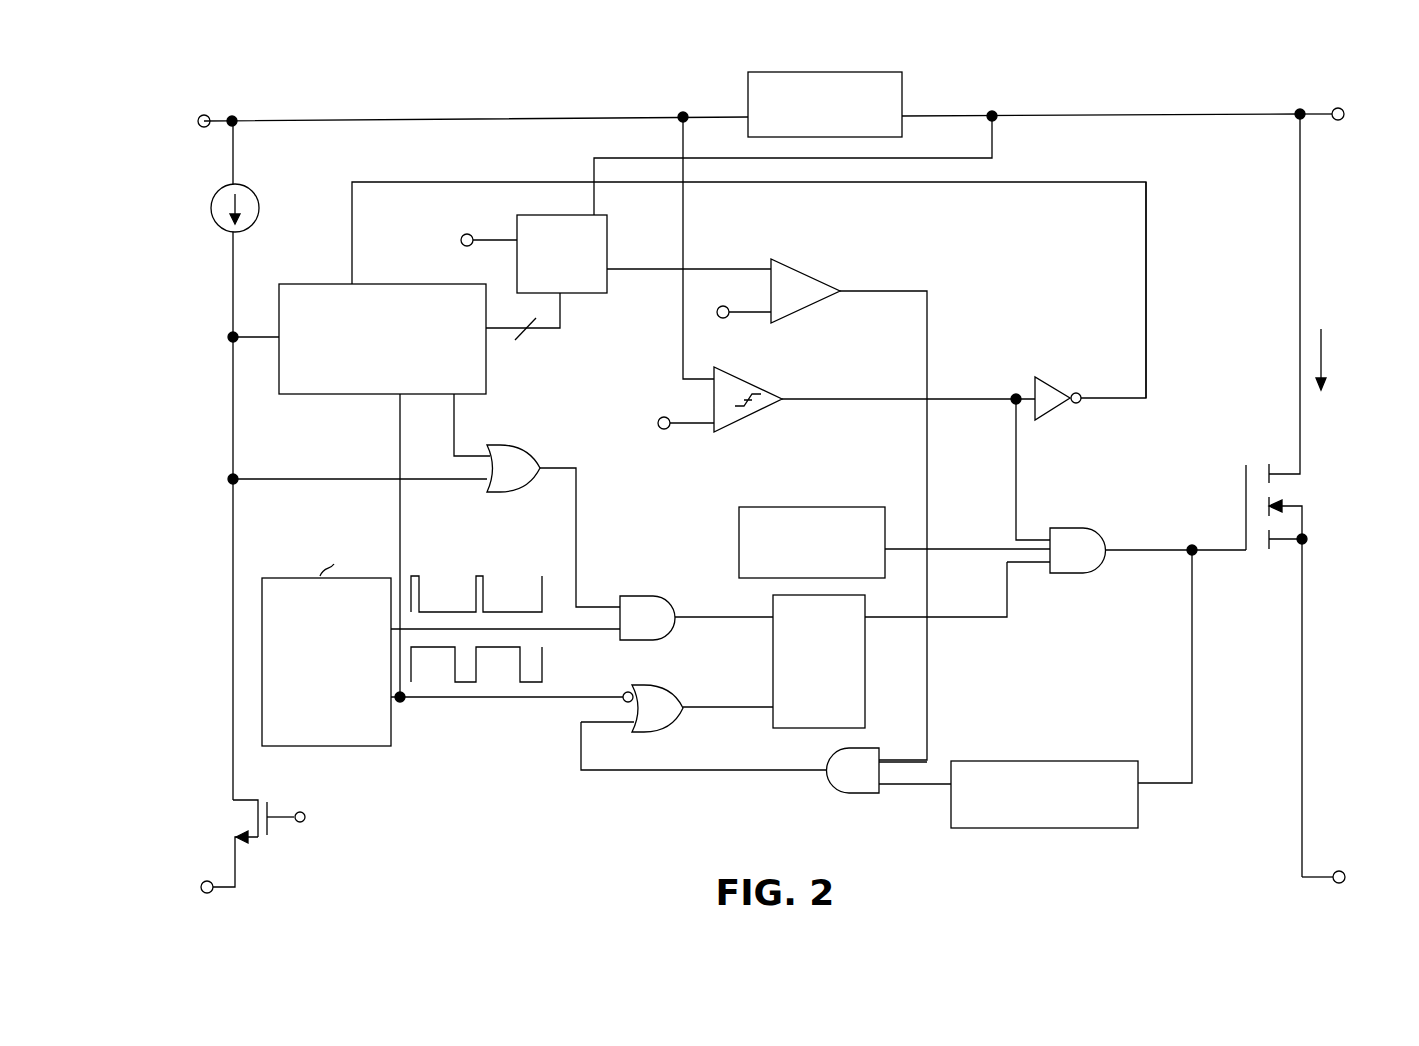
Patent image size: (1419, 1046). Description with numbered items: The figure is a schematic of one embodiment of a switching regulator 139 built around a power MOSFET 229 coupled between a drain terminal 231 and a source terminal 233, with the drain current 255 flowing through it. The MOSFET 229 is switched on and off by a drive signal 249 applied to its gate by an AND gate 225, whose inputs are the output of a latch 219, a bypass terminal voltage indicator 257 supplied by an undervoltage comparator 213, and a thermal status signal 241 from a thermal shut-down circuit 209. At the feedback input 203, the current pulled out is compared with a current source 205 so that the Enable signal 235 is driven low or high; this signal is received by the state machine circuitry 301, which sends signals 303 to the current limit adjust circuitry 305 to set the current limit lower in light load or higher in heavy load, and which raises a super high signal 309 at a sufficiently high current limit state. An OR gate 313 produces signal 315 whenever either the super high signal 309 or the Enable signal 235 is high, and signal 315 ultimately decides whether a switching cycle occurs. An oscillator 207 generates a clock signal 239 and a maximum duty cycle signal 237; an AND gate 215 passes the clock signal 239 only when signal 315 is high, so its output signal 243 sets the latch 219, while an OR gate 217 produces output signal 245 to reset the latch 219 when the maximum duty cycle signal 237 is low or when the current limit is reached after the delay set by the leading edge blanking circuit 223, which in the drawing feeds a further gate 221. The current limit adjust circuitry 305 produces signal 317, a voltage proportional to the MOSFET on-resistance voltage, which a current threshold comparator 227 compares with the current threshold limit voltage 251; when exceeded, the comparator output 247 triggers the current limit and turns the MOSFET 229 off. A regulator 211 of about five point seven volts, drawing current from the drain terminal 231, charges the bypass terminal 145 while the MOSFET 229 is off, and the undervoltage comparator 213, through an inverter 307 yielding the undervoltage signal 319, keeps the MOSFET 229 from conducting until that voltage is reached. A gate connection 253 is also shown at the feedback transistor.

The switching regulator 139 is at (807, 425).
The bypass terminal 145 is at (204, 128).
The current source 205 is at (264, 192).
The 5.7V regulator 211 is at (904, 80).
The drain terminal 231 is at (1336, 124).
The drive signal 249 is at (472, 234).
The current limit adjust circuitry 305 is at (530, 214).
The state machine circuitry 301 is at (412, 283).
The signals 303 is at (559, 328).
The signal 317 is at (652, 268).
The current threshold comparator 227 is at (805, 291).
The current threshold limit voltage 251 is at (778, 337).
The current limit comparator output 247 is at (930, 342).
The undervoltage comparator 213 is at (750, 418).
The inverter 307 is at (1050, 378).
The undervoltage signal 319 is at (1148, 332).
The drain current 255 is at (1330, 370).
The bypass terminal voltage indicator 257 is at (1018, 482).
The MOSFET 229 is at (1296, 490).
The source terminal 233 is at (1320, 874).
The Enable signal 235 is at (334, 477).
The super high signal 309 is at (456, 428).
The OR gate 313 is at (515, 468).
The signal 315 is at (580, 522).
The thermal shut-down circuit 209 is at (750, 507).
The thermal status signal 241 is at (962, 548).
The AND gate 225 is at (1056, 550).
The oscillator 207 is at (326, 644).
The clock signal 239 is at (568, 634).
The maximum duty cycle signal 237 is at (455, 702).
The AND gate 215 is at (647, 618).
The AND gate output signal 243 is at (716, 615).
The OR gate 217 is at (632, 708).
The OR gate output signal 245 is at (720, 706).
The latch 219 is at (890, 645).
The AND gate 221 is at (754, 757).
The leading edge blanking circuit 223 is at (1098, 760).
The feedback input 203 is at (222, 880).
The feedback transistor gate voltage 253 is at (264, 842).